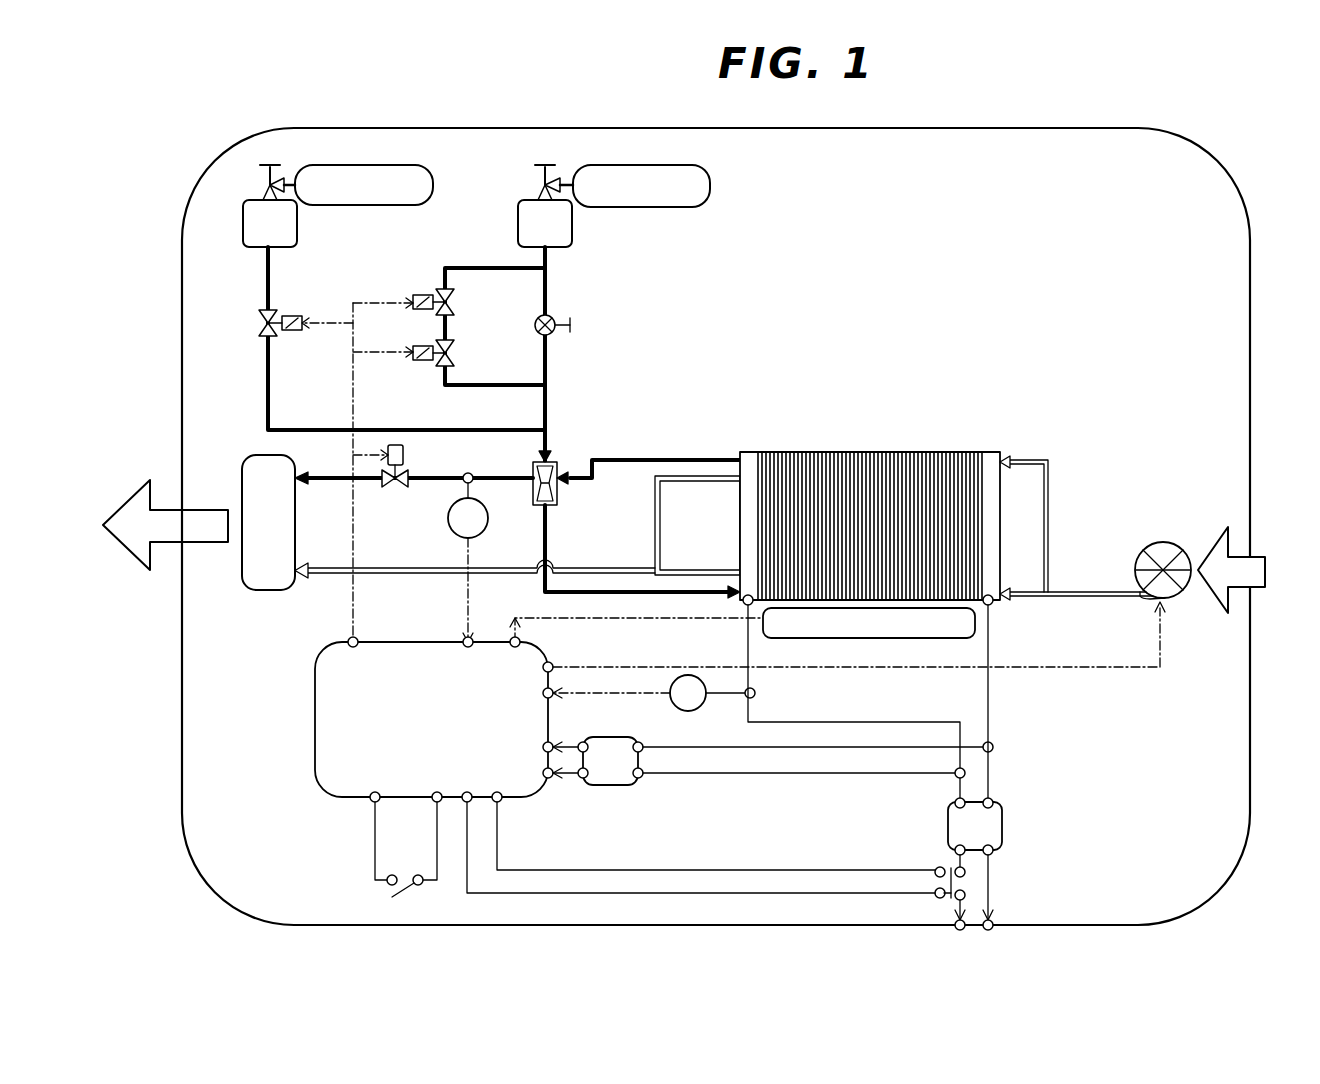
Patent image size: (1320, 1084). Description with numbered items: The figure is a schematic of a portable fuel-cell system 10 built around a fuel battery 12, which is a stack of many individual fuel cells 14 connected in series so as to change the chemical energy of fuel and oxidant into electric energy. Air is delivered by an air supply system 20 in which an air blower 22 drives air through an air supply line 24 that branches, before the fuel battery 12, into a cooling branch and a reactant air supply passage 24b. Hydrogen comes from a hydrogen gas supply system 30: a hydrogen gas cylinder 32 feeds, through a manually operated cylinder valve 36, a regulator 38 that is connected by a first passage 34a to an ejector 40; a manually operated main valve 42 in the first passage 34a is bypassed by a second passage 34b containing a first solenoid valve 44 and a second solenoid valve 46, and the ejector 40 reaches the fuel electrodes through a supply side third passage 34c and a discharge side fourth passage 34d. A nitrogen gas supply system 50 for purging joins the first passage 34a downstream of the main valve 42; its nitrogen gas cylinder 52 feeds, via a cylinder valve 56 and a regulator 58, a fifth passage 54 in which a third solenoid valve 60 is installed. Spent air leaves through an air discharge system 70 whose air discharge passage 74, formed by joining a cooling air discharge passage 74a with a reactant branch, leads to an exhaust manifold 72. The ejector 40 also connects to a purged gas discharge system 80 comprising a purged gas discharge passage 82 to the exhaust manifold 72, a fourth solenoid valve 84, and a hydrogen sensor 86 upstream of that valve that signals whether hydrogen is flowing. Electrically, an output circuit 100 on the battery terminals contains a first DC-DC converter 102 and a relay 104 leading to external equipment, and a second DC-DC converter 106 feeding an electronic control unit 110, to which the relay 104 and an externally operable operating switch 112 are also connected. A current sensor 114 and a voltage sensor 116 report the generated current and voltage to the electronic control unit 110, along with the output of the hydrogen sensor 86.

The fuel-cell system 10 is at (1250, 240).
The fuel battery 12 is at (870, 494).
The fuel cells 14 is at (884, 452).
The air supply system 20 is at (1132, 537).
The air blower 22 is at (1164, 541).
The air supply line 24 is at (1076, 533).
The reactant air supply passage 24b is at (1046, 458).
The hydrogen gas supply system 30 is at (559, 381).
The hydrogen gas cylinder 32 is at (711, 185).
The first passage 34a is at (548, 366).
The second passage 34b is at (464, 267).
The third passage 34c is at (548, 535).
The fourth passage 34d is at (634, 458).
The cylinder valve 36 is at (540, 192).
The regulator 38 is at (545, 223).
The ejector 40 is at (553, 460).
The main valve 42 is at (553, 318).
The first solenoid valve 44 is at (455, 300).
The second solenoid valve 46 is at (455, 356).
The nitrogen gas supply system 50 is at (378, 294).
The nitrogen gas cylinder 52 is at (400, 206).
The fifth passage 54 is at (270, 370).
The cylinder valve 56 is at (284, 178).
The regulator 58 is at (270, 223).
The third solenoid valve 60 is at (257, 323).
The air discharge system 70 is at (421, 553).
The exhaust manifold 72 is at (268, 522).
The air discharge passage 74 is at (517, 527).
The cooling air discharge passage 74a is at (688, 567).
The purged gas discharge system 80 is at (378, 530).
The purged gas discharge passage 82 is at (441, 476).
The fourth solenoid valve 84 is at (403, 488).
The hydrogen sensor 86 is at (479, 536).
The output circuit 100 is at (703, 633).
The first DC-DC converter 102 is at (975, 767).
The relay 104 is at (945, 865).
The second DC-DC converter 106 is at (773, 761).
The electronic control unit 110 is at (315, 724).
The operating switch 112 is at (383, 897).
The current sensor 114 is at (670, 702).
The voltage sensor 116 is at (835, 640).